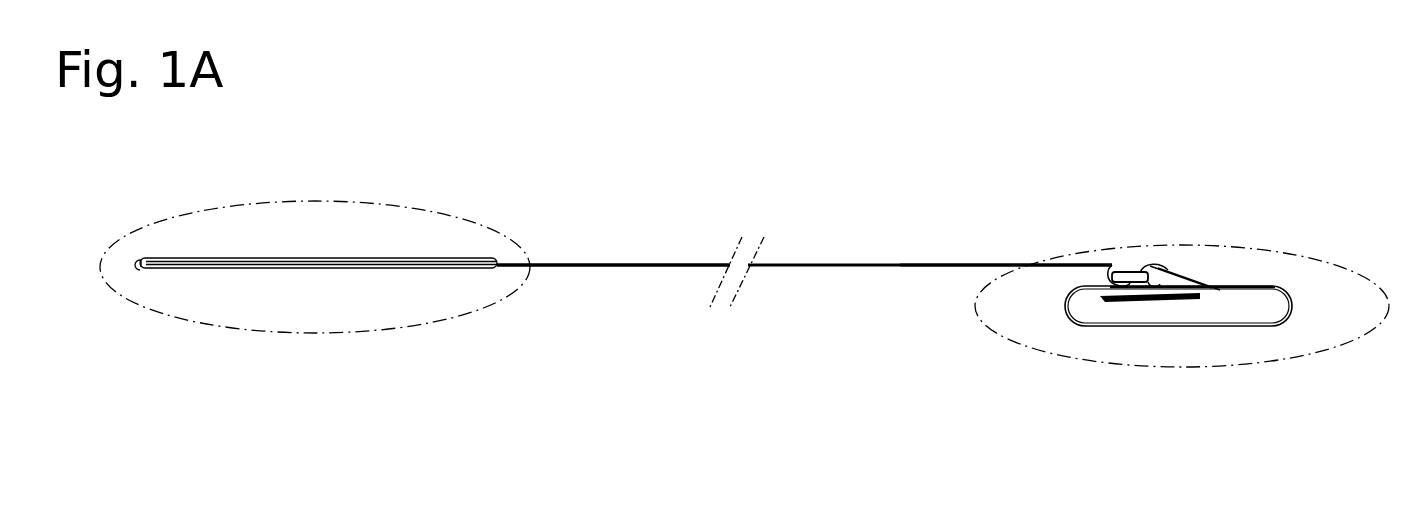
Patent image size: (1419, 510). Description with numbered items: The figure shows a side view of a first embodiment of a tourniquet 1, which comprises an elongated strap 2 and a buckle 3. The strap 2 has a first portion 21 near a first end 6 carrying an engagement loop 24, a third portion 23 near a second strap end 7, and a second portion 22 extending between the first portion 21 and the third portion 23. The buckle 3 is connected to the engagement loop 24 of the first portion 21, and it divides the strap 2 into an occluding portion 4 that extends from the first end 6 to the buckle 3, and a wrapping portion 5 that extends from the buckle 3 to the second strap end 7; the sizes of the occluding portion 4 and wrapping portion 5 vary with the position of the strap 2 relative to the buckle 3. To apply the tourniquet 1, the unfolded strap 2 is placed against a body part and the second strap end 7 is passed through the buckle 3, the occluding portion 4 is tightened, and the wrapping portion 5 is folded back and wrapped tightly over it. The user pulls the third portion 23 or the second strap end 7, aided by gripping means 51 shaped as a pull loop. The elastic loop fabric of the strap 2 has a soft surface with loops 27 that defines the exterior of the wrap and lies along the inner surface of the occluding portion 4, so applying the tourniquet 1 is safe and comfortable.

The tourniquet 1 is at (1320, 107).
The strap 2 is at (608, 265).
The buckle 3 is at (1128, 276).
The occluding portion 4 is at (1170, 312).
The wrapping portion 5 is at (545, 198).
The first end 6 is at (1078, 300).
The second strap end 7 is at (118, 254).
The first portion 21 is at (1248, 288).
The second portion 22 is at (845, 265).
The third portion 23 is at (352, 262).
The engagement loop 24 is at (1170, 284).
The surface with loops 27 is at (932, 265).
The gripping means 51 is at (147, 261).